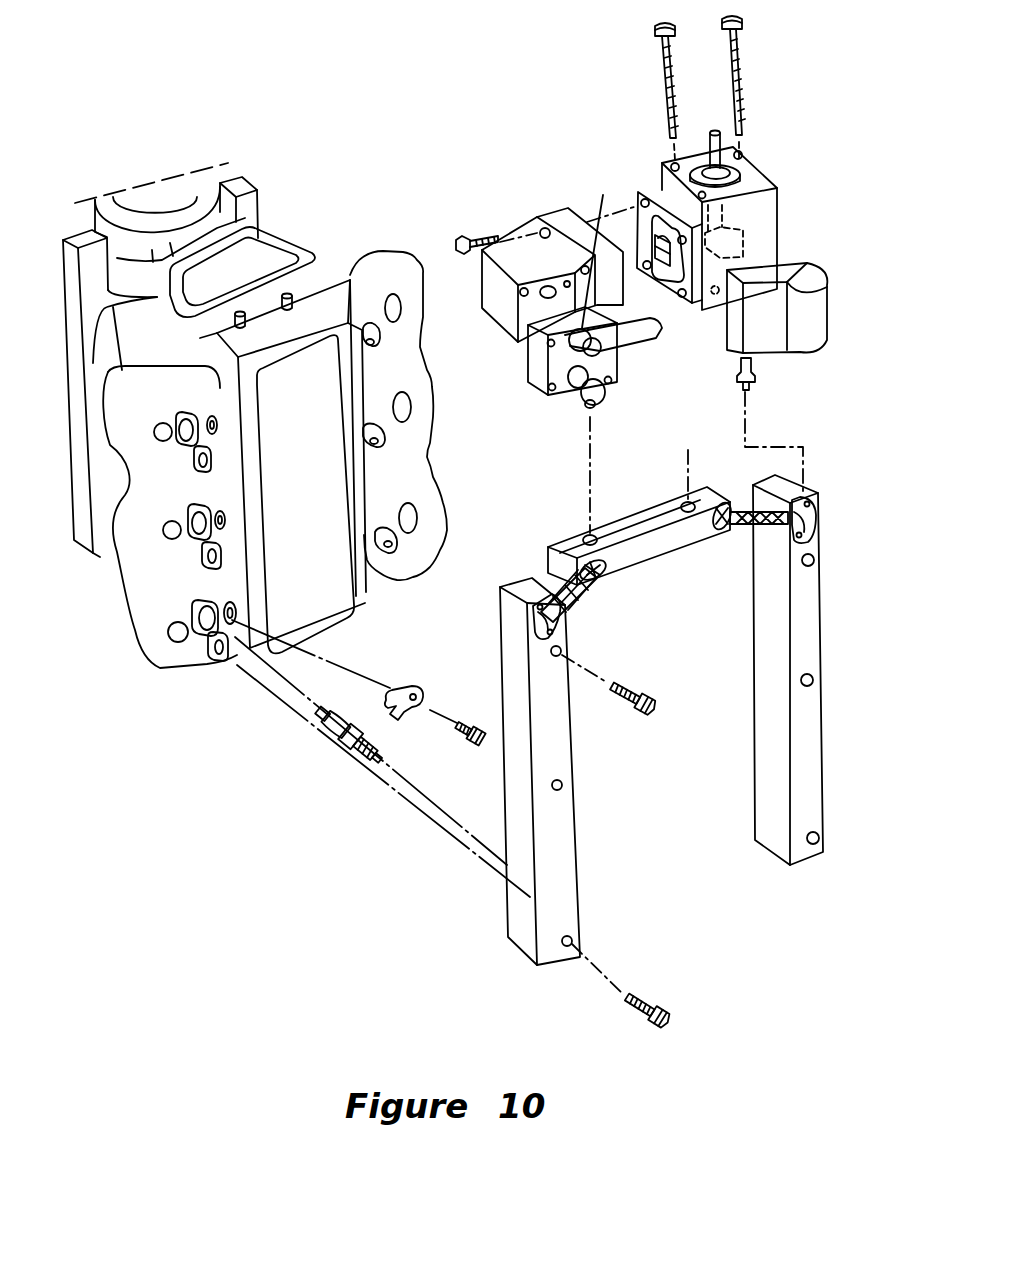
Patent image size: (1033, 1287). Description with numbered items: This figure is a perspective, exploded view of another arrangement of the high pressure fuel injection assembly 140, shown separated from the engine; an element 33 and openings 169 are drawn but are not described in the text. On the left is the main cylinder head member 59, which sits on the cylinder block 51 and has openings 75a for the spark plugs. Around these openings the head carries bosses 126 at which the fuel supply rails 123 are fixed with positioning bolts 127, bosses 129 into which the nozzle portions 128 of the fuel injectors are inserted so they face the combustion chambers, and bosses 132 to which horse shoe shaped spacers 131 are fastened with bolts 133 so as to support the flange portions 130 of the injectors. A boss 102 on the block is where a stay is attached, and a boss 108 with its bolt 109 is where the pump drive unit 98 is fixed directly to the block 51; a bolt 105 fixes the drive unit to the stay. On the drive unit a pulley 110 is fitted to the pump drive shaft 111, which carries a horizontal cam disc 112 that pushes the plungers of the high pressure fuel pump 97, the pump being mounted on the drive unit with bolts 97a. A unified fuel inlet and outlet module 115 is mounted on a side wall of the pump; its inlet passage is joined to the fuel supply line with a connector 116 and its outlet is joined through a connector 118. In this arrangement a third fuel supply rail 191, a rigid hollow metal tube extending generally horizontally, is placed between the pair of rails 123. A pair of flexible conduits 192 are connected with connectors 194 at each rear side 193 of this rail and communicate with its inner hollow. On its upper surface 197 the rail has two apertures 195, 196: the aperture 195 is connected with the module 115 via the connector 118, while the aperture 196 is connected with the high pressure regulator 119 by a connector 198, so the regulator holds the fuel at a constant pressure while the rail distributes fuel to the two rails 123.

The engine 33 is at (400, 214).
The cylinder block 51 is at (327, 297).
The main cylinder head member 59 is at (423, 417).
The openings 75a is at (157, 430).
The high pressure fuel pump 97 is at (518, 253).
The bolts 97a is at (462, 255).
The pump drive unit 98 is at (762, 160).
The boss 102 is at (287, 297).
The bolt 105 is at (660, 68).
The boss 108 is at (318, 268).
The bolt 109 is at (742, 80).
The pulley 110 is at (243, 314).
The pump drive shaft 111 is at (713, 130).
The cam disc 112 is at (742, 220).
The unified fuel inlet and outlet module 115 is at (533, 363).
The connector 116 is at (604, 237).
The connector 118 is at (575, 385).
The high pressure regulator 119 is at (832, 255).
The fuel supply rails 123 is at (762, 728).
The bosses 126 is at (212, 465).
The positioning bolts 127 is at (660, 705).
The nozzle portions 128 is at (326, 708).
The bosses 129 is at (182, 415).
The flange portions 130 is at (330, 730).
The horse shoe shaped spacers 131 is at (407, 688).
The bosses 132 is at (223, 422).
The bolts 133 is at (472, 745).
The high pressure fuel injection assembly 140 is at (680, 794).
The mounting hole 169 is at (562, 653).
The third fuel supply rail 191 is at (637, 507).
The flexible conduits 192 is at (540, 605).
The rear side 193 is at (628, 555).
The connectors 194 is at (595, 578).
The aperture 195 is at (583, 540).
The aperture 196 is at (693, 468).
The upper surface 197 is at (653, 520).
The connector 198 is at (757, 378).